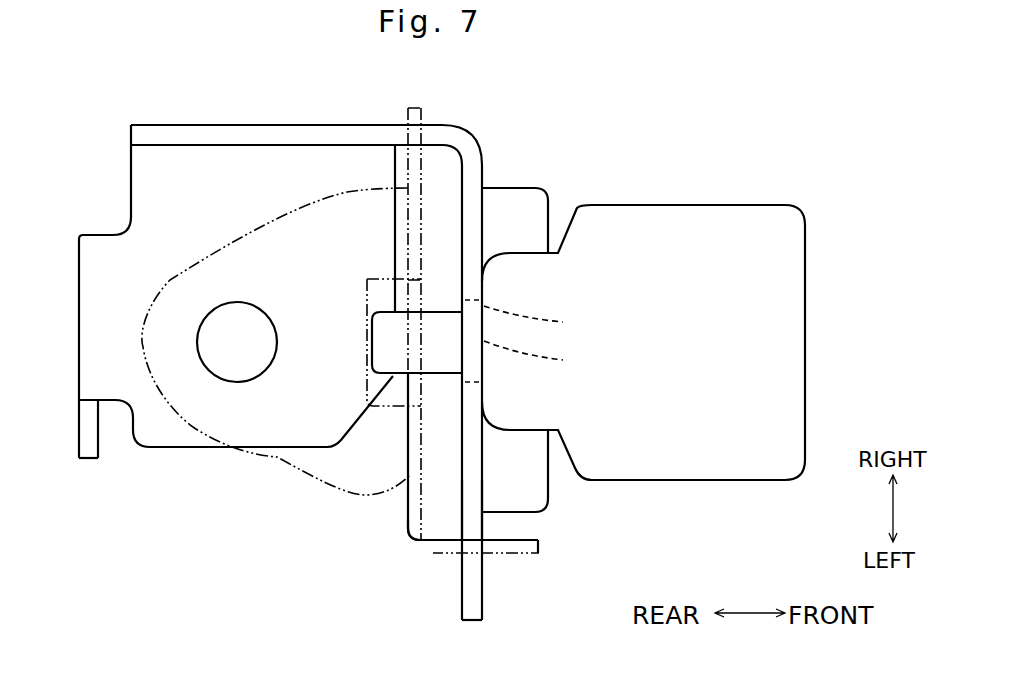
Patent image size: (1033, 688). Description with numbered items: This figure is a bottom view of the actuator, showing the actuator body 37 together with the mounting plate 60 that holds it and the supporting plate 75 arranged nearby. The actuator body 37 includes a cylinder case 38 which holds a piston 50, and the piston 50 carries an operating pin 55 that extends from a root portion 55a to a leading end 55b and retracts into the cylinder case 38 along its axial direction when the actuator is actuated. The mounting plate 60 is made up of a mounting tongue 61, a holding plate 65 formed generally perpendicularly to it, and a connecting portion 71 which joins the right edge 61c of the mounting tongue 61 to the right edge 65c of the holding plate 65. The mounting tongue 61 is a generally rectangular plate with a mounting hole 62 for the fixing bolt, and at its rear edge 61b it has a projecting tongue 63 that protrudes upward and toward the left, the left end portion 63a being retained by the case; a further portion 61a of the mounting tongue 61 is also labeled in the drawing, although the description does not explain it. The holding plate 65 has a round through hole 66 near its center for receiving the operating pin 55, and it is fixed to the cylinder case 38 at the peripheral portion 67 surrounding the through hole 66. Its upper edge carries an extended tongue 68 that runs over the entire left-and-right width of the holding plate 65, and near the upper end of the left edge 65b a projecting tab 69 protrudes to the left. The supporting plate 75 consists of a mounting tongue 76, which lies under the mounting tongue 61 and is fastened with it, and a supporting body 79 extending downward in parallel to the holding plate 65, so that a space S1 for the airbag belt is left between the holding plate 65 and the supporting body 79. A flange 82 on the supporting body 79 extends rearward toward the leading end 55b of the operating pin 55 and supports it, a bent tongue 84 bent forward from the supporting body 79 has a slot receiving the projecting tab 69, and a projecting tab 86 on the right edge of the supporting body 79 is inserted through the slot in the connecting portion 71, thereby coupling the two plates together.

The actuator body 37 is at (773, 198).
The cylinder case 38 is at (678, 225).
The piston 50 is at (347, 325).
The operating pin 55 is at (362, 325).
The root portion 55a is at (566, 358).
The leading end 55b is at (382, 353).
The mounting plate 60 is at (487, 140).
The mounting tongue 61 is at (170, 435).
The bracket vertical flange 61a is at (388, 395).
The rear edge 61b is at (93, 357).
The right edge 61c is at (250, 157).
The mounting hole 62 is at (237, 375).
The projecting tongue 63 is at (77, 425).
The left end portion 63a is at (89, 455).
The holding plate 65 is at (460, 513).
The left edge 65b is at (470, 507).
The right edge 65c is at (485, 160).
The through hole 66 is at (563, 322).
The peripheral portion 67 is at (482, 288).
The extended tongue 68 is at (528, 197).
The projecting tab 69 is at (468, 598).
The connecting portion 71 is at (345, 138).
The supporting plate 75 is at (395, 530).
The mounting tongue 76 is at (298, 465).
The supporting body 79 is at (418, 477).
The flange 82 is at (368, 298).
The bent tongue 84 is at (517, 547).
The projecting tab 86 is at (422, 115).
The space S1 is at (447, 270).